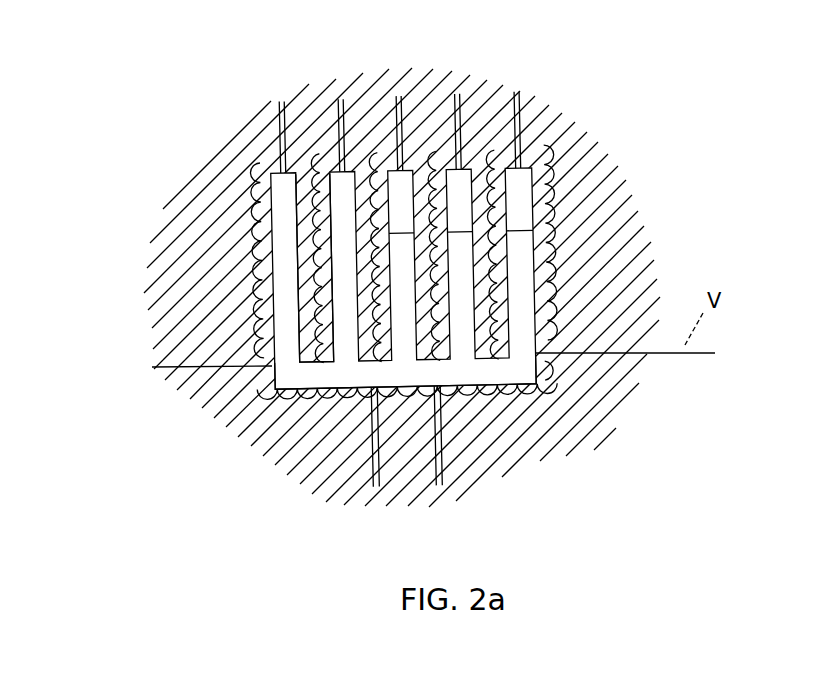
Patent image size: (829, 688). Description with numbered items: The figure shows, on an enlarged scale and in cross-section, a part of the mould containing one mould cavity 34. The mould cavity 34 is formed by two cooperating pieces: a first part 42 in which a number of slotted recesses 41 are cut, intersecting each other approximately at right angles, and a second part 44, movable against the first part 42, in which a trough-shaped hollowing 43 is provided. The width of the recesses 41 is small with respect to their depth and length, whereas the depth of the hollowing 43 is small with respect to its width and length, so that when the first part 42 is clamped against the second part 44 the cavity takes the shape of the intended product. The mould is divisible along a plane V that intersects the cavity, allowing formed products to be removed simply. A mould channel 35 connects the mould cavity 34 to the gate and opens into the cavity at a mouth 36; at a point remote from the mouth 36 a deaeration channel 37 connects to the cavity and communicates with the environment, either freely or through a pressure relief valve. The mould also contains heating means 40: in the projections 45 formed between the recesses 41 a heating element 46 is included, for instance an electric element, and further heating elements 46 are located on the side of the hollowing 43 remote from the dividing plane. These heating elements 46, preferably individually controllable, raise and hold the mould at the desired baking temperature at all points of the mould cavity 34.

The mould cavity 34 is at (517, 295).
The mould channel 35 is at (433, 462).
The mouth 36 is at (440, 410).
The deaeration channel 37 is at (522, 97).
The heating means 40 is at (548, 172).
The slotted recess 41 is at (515, 240).
The first part 42 is at (207, 283).
The trough-shaped hollowing 43 is at (318, 357).
The second part 44 is at (518, 445).
The projection 45 is at (305, 362).
The heating element 46 is at (372, 150).